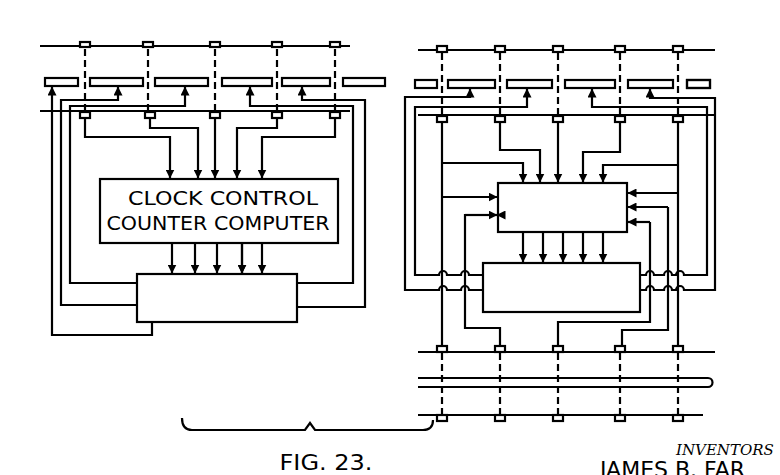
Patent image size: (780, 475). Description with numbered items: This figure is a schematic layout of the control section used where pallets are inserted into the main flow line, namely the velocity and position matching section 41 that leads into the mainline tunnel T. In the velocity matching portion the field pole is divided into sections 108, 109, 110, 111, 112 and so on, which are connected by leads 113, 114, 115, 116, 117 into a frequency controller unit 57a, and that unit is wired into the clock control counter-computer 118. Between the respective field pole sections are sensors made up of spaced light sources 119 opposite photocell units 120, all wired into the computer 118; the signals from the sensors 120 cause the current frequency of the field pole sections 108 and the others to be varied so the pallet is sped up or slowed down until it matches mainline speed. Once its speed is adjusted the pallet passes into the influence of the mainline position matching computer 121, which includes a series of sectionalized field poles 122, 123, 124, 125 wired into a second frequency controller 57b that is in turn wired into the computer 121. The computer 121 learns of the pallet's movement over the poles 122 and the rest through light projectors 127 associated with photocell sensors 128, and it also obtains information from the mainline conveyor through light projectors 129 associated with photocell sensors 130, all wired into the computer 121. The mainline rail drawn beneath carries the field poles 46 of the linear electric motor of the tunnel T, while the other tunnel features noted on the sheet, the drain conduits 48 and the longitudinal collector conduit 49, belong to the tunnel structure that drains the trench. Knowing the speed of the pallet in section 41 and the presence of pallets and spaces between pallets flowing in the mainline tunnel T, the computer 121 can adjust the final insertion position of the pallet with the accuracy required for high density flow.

The velocity-matching section 41 is at (705, 70).
The field poles 46 is at (703, 388).
The conduits 48 is at (487, 7).
The longitudinal collector conduit 49 is at (396, 0).
The frequency controller unit 57a is at (236, 323).
The frequency controller 57b is at (524, 313).
The field pole section 108 is at (56, 63).
The field pole section 109 is at (106, 82).
The field pole section 110 is at (190, 78).
The field pole section 111 is at (250, 79).
The field pole section 112 is at (296, 80).
The lead 113 is at (90, 336).
The lead 114 is at (88, 305).
The lead 115 is at (116, 264).
The lead 116 is at (353, 163).
The lead 117 is at (365, 167).
The clock control counter-computer 118 is at (308, 246).
The light sources 119 is at (148, 43).
The photocell units 120 is at (150, 120).
The mainline position matching computer 121 is at (628, 183).
The sectionalized field pole 122 is at (472, 66).
The sectionalized field pole 123 is at (538, 80).
The sectionalized field pole 124 is at (596, 80).
The sectionalized field pole 125 is at (660, 80).
The light projectors 127 is at (620, 46).
The photocell sensors 128 is at (499, 123).
The light projectors 129 is at (445, 422).
The photocell sensors 130 is at (505, 353).
The mainline tunnel T is at (706, 366).